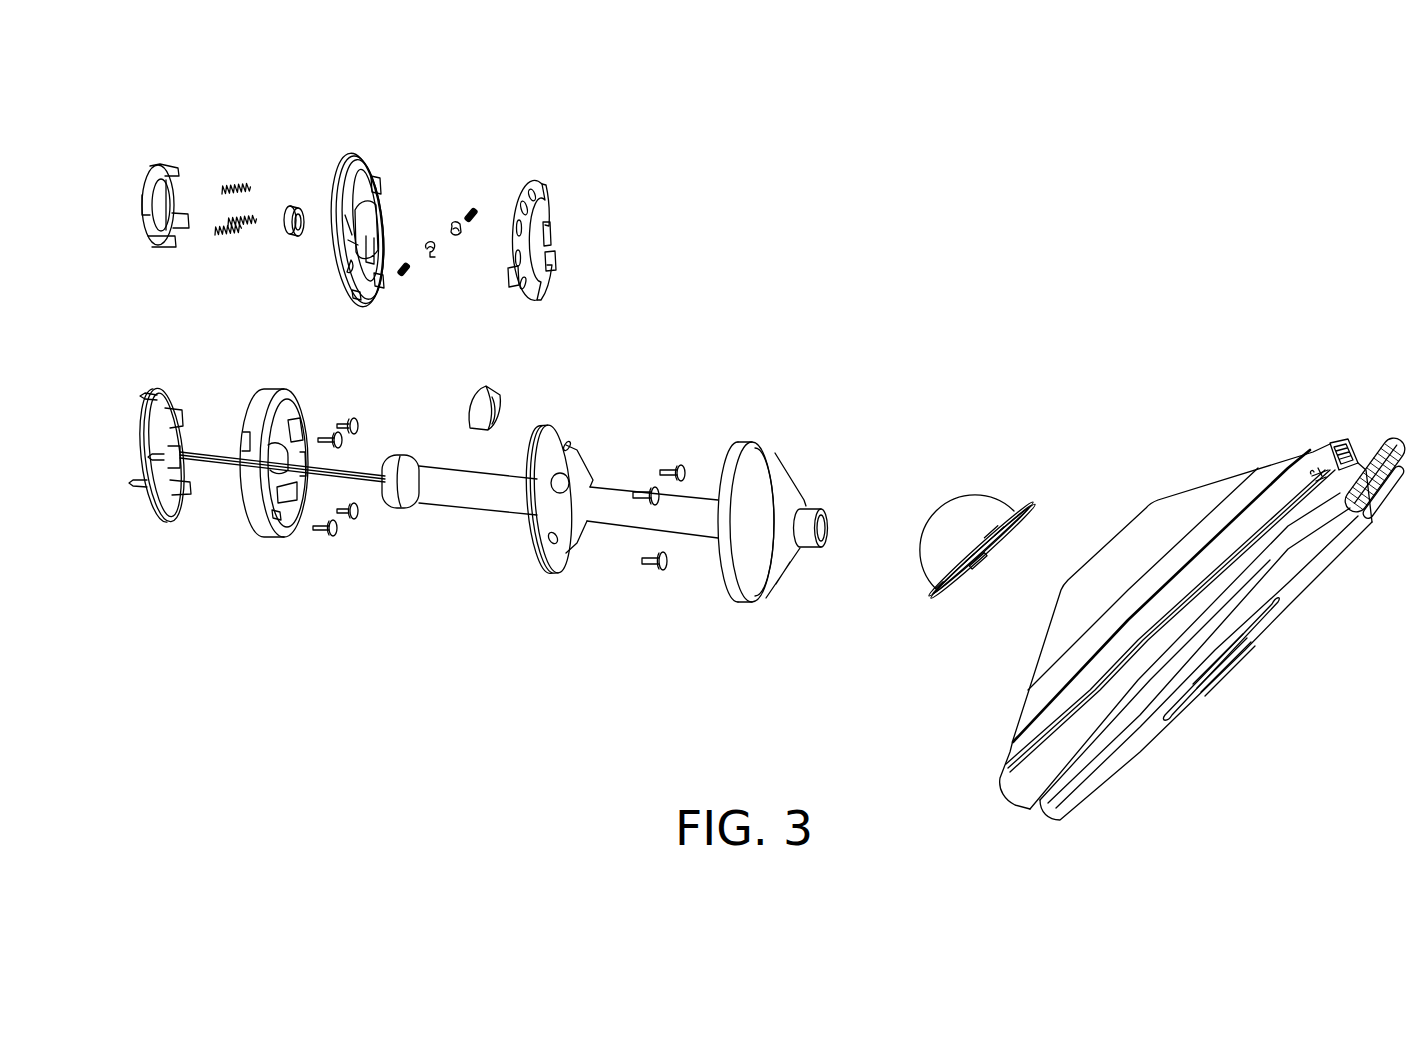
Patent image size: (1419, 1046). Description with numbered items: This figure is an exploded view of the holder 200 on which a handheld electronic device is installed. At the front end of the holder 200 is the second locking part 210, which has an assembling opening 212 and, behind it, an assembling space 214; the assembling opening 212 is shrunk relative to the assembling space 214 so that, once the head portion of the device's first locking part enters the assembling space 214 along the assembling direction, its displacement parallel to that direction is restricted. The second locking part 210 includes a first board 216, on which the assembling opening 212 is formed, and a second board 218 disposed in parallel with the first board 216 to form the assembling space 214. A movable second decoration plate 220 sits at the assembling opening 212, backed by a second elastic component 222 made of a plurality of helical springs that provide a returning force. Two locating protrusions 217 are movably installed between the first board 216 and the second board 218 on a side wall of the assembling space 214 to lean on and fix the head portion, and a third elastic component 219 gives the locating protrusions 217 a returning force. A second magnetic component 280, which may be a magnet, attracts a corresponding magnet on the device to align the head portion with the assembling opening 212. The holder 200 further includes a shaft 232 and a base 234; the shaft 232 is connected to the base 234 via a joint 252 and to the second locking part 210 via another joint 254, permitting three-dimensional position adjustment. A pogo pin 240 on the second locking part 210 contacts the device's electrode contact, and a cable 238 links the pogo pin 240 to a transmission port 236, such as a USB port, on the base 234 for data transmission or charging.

The holder 200 is at (708, 767).
The second locking part 210 is at (537, 163).
The assembling opening 212 is at (366, 222).
The assembling space 214 is at (344, 281).
The first board 216 is at (374, 172).
The locating protrusions 217 is at (456, 240).
The second board 218 is at (556, 211).
The third elastic component 219 is at (405, 277).
The second decoration plate 220 is at (153, 170).
The second elastic component 222 is at (258, 166).
The shaft 232 is at (613, 497).
The base 234 is at (1193, 503).
The transmission port 236 is at (1340, 447).
The cable 238 is at (205, 445).
The pogo pin 240 is at (157, 390).
The joint 252 is at (972, 502).
The joint 254 is at (404, 457).
The second magnetic component 280 is at (295, 238).